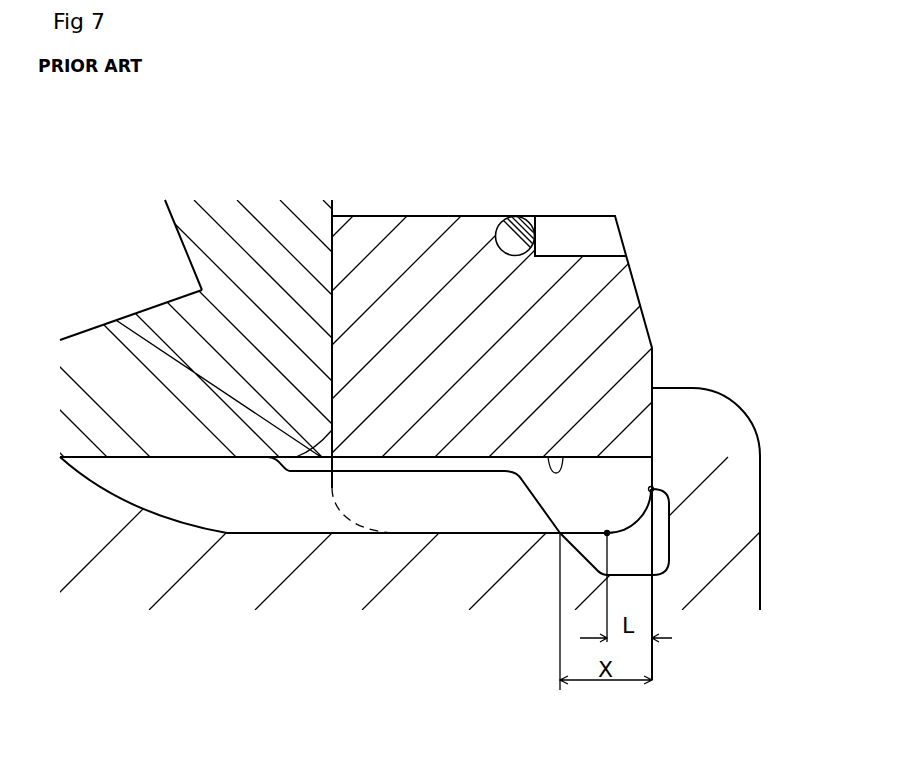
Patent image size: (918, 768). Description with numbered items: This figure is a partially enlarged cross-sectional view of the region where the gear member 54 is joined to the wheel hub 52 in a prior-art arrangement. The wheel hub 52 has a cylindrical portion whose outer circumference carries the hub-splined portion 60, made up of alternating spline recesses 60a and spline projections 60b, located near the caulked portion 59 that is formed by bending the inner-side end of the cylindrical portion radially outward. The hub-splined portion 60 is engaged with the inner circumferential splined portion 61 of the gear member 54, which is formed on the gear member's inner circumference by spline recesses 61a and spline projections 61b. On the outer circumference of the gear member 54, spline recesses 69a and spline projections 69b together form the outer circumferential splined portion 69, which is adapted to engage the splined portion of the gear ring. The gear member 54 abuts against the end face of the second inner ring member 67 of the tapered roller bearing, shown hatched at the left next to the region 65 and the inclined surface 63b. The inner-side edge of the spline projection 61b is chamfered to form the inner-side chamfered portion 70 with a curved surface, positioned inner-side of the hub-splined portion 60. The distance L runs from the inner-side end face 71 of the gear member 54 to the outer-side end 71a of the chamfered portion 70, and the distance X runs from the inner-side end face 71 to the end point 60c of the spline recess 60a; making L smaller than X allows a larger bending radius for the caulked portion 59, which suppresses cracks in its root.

The wheel hub 52 is at (115, 593).
The gear member 54 is at (390, 228).
The caulked portion 59 is at (684, 402).
The hub-splined portion 60 is at (342, 655).
The spline recess 60a is at (288, 533).
The spline projection 60b is at (303, 471).
The end point of the spline recess 60c is at (560, 533).
The inner circumferential splined portion 61 is at (585, 388).
The spline recess 61a is at (561, 457).
The spline projection 61b is at (530, 475).
The inclined wall surface 63b is at (120, 319).
The chamber space 65 is at (110, 230).
The second inner ring member 67 is at (275, 230).
The outer circumferential splined portion 69 is at (735, 163).
The spline recess 69a is at (587, 257).
The spline projection 69b is at (572, 228).
The inner-side chamfered portion 70 is at (635, 517).
The inner-side end face 71 is at (652, 420).
The outer-side end of the chamfered portion 71a is at (607, 533).